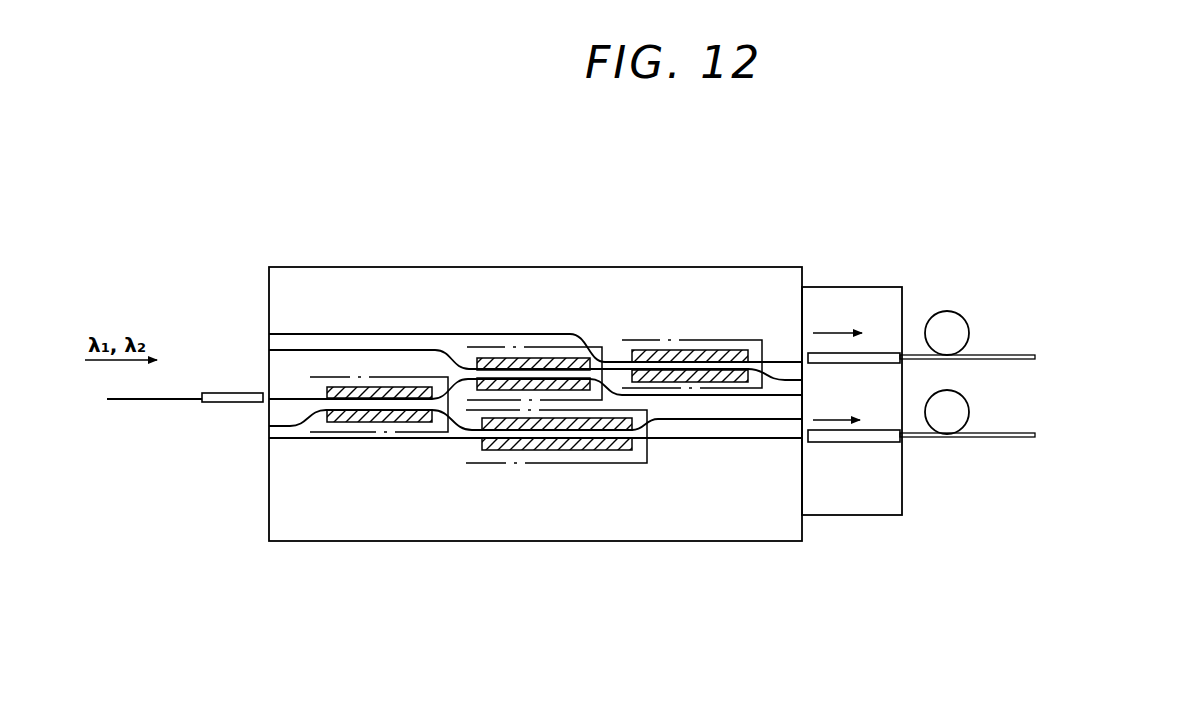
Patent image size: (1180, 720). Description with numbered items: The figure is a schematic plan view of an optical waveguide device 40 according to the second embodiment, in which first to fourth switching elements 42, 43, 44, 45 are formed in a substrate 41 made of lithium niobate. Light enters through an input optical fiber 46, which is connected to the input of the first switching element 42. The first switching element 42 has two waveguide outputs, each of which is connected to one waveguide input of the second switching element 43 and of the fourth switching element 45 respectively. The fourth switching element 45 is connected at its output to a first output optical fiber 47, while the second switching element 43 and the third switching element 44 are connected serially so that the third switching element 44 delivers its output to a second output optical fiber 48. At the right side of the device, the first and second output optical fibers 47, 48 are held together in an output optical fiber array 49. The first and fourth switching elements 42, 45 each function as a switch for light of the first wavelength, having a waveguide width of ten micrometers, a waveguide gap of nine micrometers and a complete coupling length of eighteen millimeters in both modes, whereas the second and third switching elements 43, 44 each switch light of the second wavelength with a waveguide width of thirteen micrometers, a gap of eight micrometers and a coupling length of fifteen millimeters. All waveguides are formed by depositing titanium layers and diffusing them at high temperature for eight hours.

The optical waveguide device 40 is at (591, 384).
The substrate 41 is at (317, 283).
The first switching element 42 is at (392, 430).
The second switching element 43 is at (517, 347).
The third switching element 44 is at (671, 340).
The fourth switching element 45 is at (592, 458).
The input optical fiber 46 is at (210, 404).
The first output optical fiber 47 is at (882, 438).
The second output optical fiber 48 is at (877, 357).
The output optical fiber array 49 is at (972, 433).